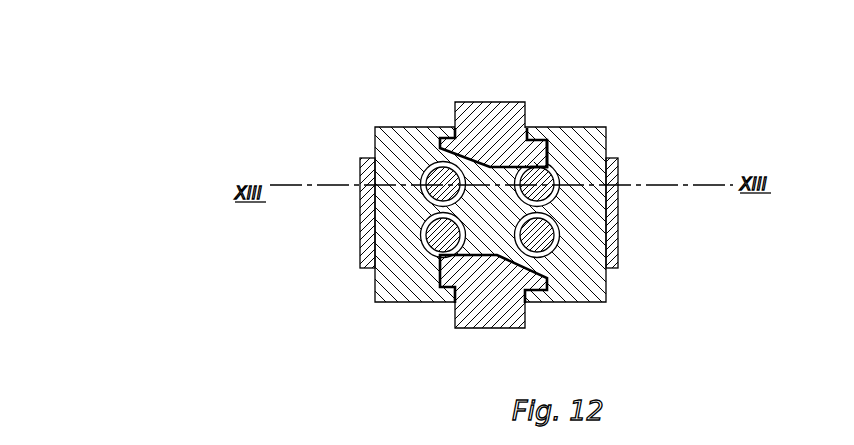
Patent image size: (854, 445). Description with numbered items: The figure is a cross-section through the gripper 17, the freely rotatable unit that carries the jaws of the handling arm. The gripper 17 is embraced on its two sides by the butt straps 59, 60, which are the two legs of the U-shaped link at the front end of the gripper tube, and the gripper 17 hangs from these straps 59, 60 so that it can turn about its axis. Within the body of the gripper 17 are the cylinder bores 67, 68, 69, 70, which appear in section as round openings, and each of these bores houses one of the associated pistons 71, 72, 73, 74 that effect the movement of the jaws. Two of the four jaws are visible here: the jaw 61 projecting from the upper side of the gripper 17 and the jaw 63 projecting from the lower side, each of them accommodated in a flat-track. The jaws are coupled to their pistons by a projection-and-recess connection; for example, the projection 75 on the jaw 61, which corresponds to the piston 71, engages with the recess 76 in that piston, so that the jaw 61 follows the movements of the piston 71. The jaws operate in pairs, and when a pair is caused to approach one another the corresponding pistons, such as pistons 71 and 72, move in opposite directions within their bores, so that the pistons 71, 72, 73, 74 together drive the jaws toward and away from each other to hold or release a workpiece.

The gripper 17 is at (624, 313).
The butt strap 59 is at (371, 234).
The butt strap 60 is at (610, 222).
The jaw 61 is at (493, 103).
The jaw 63 is at (468, 310).
The cylinder bore 67 is at (556, 150).
The cylinder bore 68 is at (411, 124).
The cylinder bore 69 is at (384, 248).
The cylinder bore 70 is at (558, 233).
The piston 71 is at (553, 166).
The piston 72 is at (434, 167).
The piston 73 is at (430, 238).
The piston 74 is at (545, 242).
The projection 75 is at (515, 147).
The recess 76 is at (562, 183).